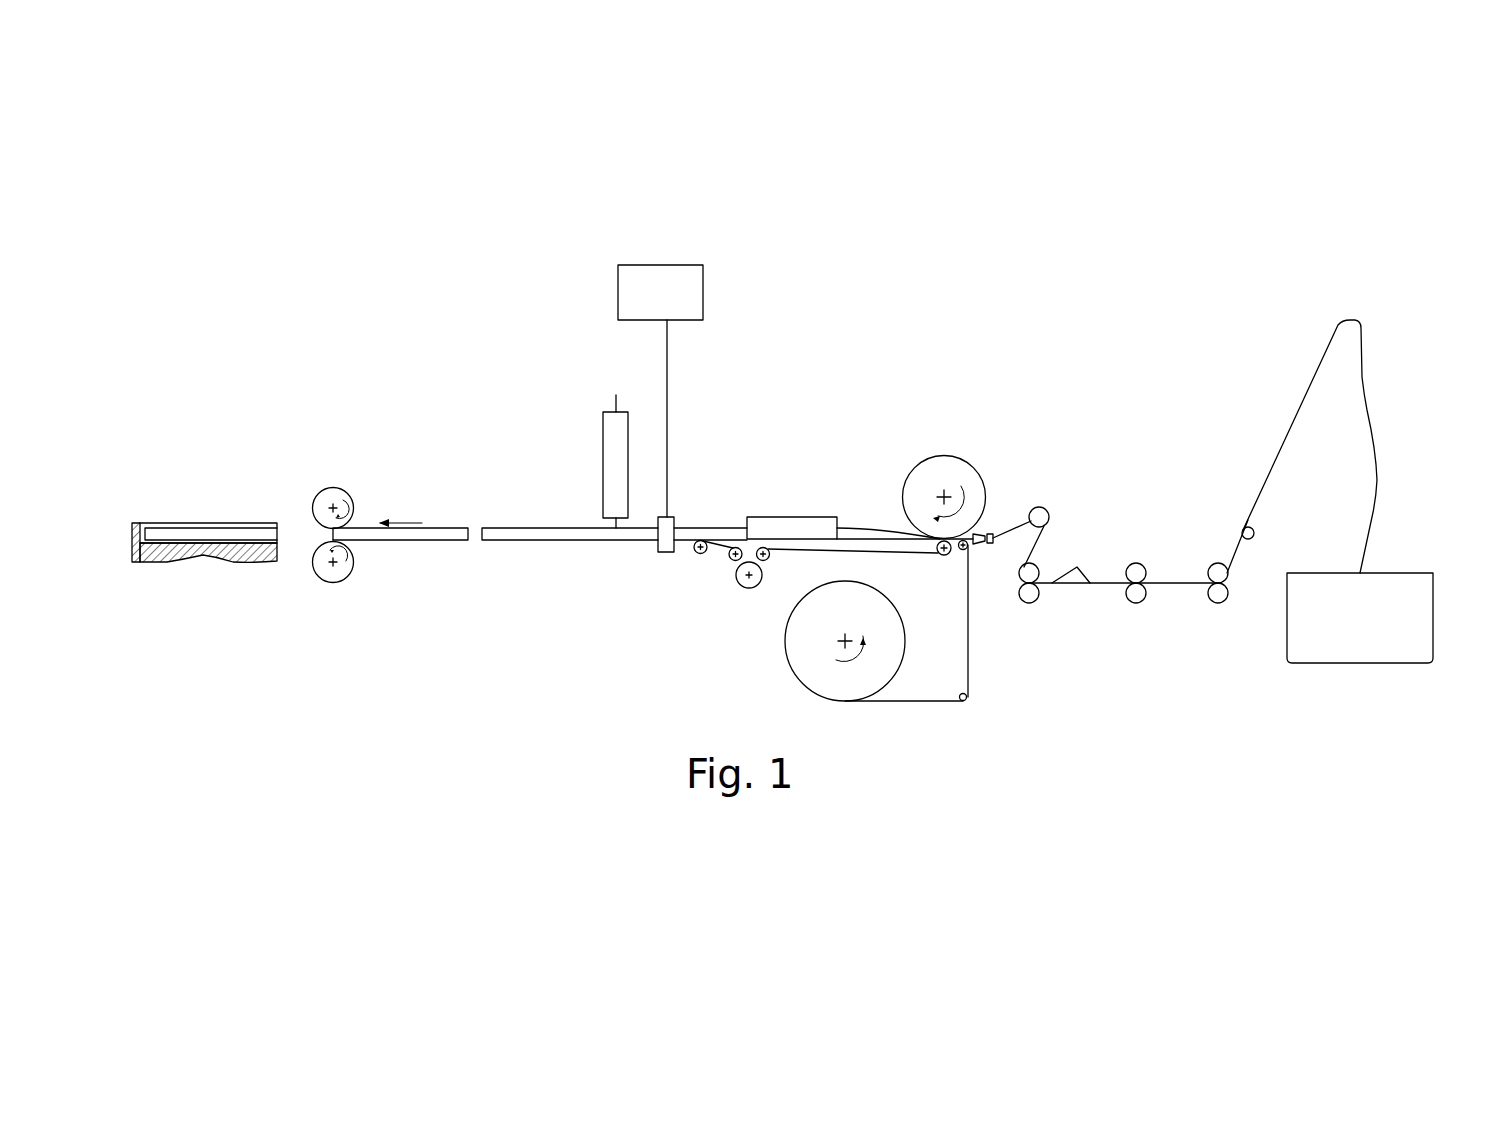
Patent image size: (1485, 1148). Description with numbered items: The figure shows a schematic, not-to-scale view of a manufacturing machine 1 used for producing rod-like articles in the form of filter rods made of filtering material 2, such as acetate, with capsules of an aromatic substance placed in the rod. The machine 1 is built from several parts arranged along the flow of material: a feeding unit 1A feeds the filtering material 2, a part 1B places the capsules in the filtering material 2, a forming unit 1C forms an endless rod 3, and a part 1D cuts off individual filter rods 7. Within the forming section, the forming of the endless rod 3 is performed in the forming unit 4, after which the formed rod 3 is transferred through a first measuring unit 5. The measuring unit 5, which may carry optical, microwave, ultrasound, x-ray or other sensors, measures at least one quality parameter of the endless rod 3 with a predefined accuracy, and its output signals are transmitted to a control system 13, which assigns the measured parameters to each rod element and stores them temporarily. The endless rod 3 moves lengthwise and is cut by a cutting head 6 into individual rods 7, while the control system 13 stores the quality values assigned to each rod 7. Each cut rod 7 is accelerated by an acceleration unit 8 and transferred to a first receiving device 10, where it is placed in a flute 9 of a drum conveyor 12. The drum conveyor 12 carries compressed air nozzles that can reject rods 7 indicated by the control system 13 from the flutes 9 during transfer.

The manufacturing machine 1 is at (788, 300).
The feeding unit 1A is at (1140, 513).
The capsule placing part 1B is at (915, 447).
The forming unit 1C is at (790, 447).
The cutting part 1D is at (517, 412).
The filtering material 2 is at (1288, 430).
The endless rod 3 is at (690, 535).
The forming unit 4 is at (795, 525).
The first measuring unit 5 is at (660, 553).
The cutting head 6 is at (605, 433).
The filter rod 7 is at (545, 535).
The acceleration unit 8 is at (318, 467).
The flute 9 is at (240, 558).
The first receiving device 10 is at (198, 510).
The drum conveyor 12 is at (213, 555).
The control system 13 is at (678, 307).